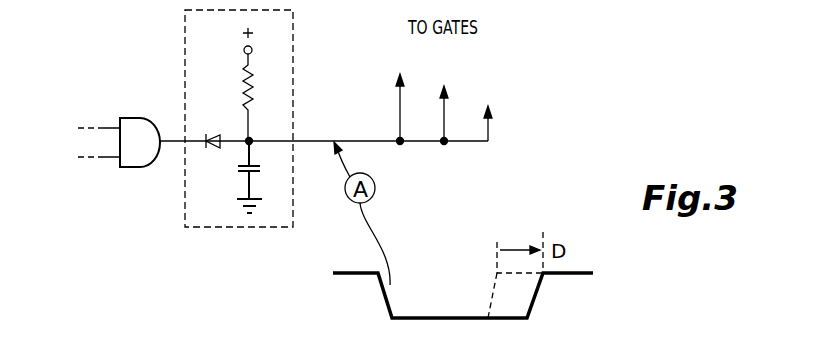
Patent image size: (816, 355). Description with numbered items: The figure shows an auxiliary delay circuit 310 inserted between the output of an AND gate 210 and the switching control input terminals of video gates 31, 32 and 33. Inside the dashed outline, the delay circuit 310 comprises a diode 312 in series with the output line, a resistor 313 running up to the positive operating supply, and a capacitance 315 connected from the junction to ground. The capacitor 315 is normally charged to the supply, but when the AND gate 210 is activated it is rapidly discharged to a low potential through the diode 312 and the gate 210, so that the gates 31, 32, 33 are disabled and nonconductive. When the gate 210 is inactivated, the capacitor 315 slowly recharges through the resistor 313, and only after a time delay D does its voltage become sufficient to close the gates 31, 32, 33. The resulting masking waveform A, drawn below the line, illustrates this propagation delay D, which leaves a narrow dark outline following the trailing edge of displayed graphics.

The AND gate 210 is at (138, 120).
The auxiliary delay circuit 310 is at (137, 214).
The diode 312 is at (215, 135).
The resistor 313 is at (265, 84).
The capacitance 315 is at (238, 168).
The video gate 31 is at (398, 95).
The video gate 32 is at (442, 101).
The video gate 33 is at (487, 109).